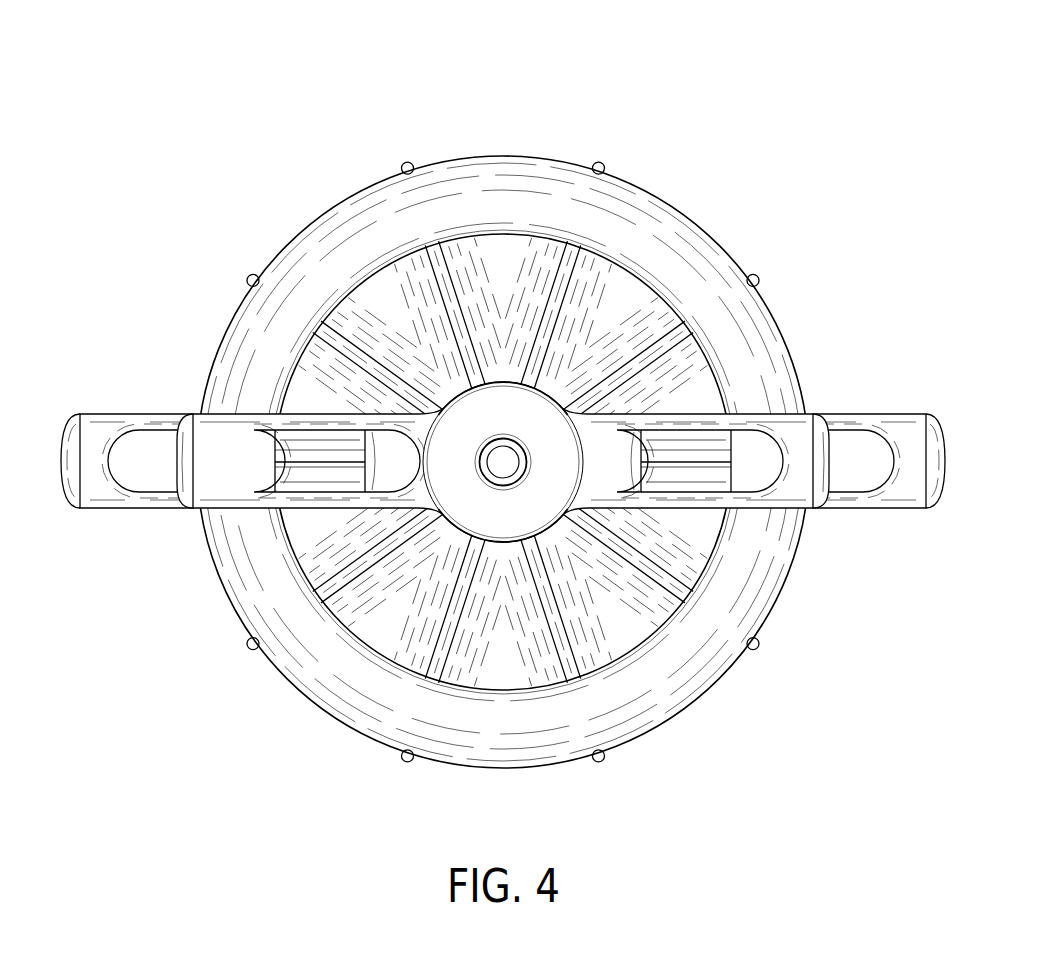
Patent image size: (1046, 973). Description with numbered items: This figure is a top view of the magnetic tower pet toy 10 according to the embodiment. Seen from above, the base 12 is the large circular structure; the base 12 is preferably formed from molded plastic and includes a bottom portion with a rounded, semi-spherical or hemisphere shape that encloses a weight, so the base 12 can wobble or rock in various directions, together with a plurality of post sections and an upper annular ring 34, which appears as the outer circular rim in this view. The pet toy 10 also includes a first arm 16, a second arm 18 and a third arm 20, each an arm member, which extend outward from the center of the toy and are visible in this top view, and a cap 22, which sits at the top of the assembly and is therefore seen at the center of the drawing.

The magnetic tower pet toy 10 is at (503, 398).
The base 12 is at (528, 426).
The first arm 16 is at (912, 423).
The second arm 18 is at (607, 457).
The third arm 20 is at (503, 361).
The cap 22 is at (500, 463).
The upper annular ring 34 is at (774, 566).